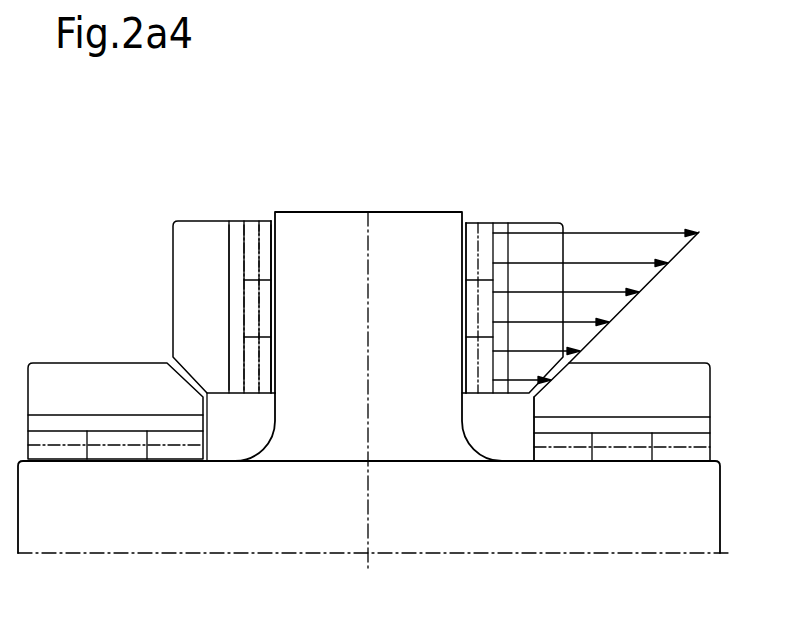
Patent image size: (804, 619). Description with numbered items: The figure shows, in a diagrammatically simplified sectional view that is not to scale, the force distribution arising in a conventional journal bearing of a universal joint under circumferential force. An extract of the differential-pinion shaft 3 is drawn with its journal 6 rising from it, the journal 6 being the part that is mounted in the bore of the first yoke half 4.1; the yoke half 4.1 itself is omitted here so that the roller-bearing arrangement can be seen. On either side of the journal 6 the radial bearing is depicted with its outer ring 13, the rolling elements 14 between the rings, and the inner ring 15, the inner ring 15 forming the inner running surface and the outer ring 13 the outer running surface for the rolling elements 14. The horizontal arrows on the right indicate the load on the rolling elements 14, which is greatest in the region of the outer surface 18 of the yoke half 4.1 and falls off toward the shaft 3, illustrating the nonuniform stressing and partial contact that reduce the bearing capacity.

The differential-pinion shaft 3 is at (323, 493).
The first yoke half 4.1 is at (183, 258).
The journal 6 is at (430, 307).
The outer ring 13 is at (231, 221).
The rolling elements 14 is at (252, 223).
The inner ring 15 is at (274, 211).
The outer surface 18 is at (531, 210).